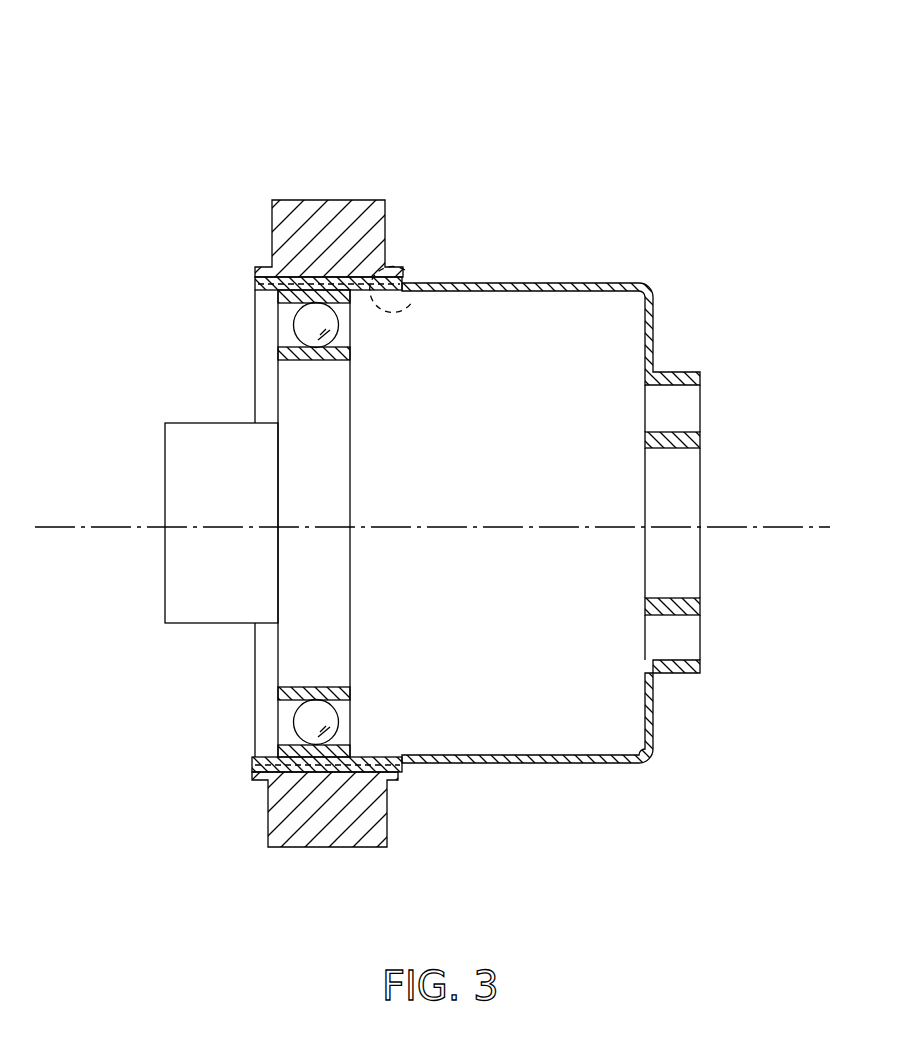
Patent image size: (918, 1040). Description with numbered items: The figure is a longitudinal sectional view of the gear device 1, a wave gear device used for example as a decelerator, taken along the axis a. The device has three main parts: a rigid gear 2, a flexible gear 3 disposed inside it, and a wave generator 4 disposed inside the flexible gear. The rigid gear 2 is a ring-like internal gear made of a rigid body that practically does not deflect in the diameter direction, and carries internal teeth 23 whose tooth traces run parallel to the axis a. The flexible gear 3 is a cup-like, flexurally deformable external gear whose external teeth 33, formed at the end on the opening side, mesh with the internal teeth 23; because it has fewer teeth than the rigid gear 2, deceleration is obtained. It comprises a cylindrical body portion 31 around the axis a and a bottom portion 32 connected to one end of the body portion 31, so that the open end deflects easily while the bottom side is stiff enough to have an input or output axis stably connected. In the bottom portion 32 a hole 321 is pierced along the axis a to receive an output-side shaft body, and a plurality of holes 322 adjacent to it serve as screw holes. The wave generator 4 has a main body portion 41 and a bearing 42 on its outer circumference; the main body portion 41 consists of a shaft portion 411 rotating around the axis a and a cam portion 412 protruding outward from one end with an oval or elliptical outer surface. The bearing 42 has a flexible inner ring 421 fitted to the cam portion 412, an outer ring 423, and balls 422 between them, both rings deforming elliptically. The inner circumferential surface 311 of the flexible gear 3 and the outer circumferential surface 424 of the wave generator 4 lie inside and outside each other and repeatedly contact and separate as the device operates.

The gear device 1 is at (660, 96).
The rigid gear 2 is at (349, 192).
The internal teeth 23 is at (424, 279).
The flexible gear 3 is at (491, 512).
The body portion 31 is at (516, 764).
The inner circumferential surface 311 is at (576, 750).
The bottom portion 32 is at (652, 326).
The hole 321 is at (683, 449).
The holes 322 is at (683, 385).
The external teeth 33 is at (283, 276).
The wave generator 4 is at (238, 594).
The main body portion 41 is at (176, 523).
The shaft portion 411 is at (216, 626).
The cam portion 412 is at (278, 656).
The bearing 42 is at (256, 540).
The inner ring 421 is at (278, 694).
The balls 422 is at (293, 724).
The outer ring 423 is at (282, 758).
The outer circumferential surface 424 is at (334, 773).
The axis a is at (97, 524).